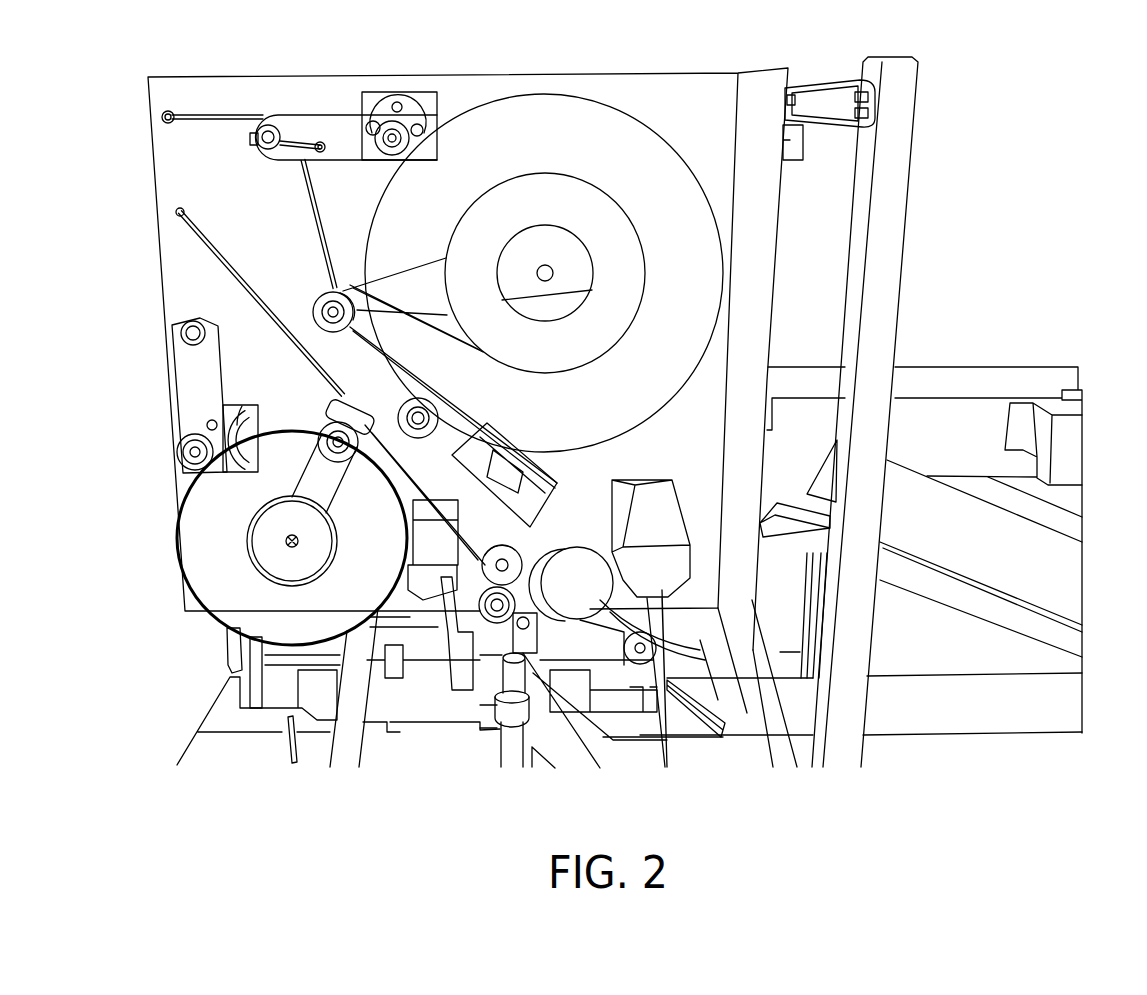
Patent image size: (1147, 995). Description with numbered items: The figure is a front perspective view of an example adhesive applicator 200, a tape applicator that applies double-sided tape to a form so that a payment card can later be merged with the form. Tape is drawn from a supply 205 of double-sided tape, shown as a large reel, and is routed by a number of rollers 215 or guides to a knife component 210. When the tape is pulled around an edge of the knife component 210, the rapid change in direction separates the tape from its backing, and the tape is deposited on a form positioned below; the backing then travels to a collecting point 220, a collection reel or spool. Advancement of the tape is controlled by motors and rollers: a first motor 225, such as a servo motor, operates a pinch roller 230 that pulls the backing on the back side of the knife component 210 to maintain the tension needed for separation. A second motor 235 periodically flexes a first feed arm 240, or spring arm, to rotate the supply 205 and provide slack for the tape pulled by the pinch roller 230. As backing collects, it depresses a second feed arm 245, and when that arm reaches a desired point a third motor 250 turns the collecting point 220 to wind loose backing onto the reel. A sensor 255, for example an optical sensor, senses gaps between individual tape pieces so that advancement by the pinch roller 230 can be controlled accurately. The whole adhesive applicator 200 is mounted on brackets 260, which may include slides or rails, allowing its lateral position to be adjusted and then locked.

The adhesive applicator 200 is at (615, 418).
The supply of double-sided tape 205 is at (534, 112).
The knife component 210 is at (724, 748).
The rollers 215 is at (386, 402).
The collecting point 220 is at (220, 554).
The first motor 225 is at (650, 545).
The pinch roller 230 is at (522, 563).
The second motor 235 is at (385, 118).
The first feed arm 240 is at (295, 182).
The second feed arm 245 is at (198, 257).
The third motor 250 is at (250, 428).
The sensor 255 is at (528, 468).
The brackets 260 is at (816, 92).